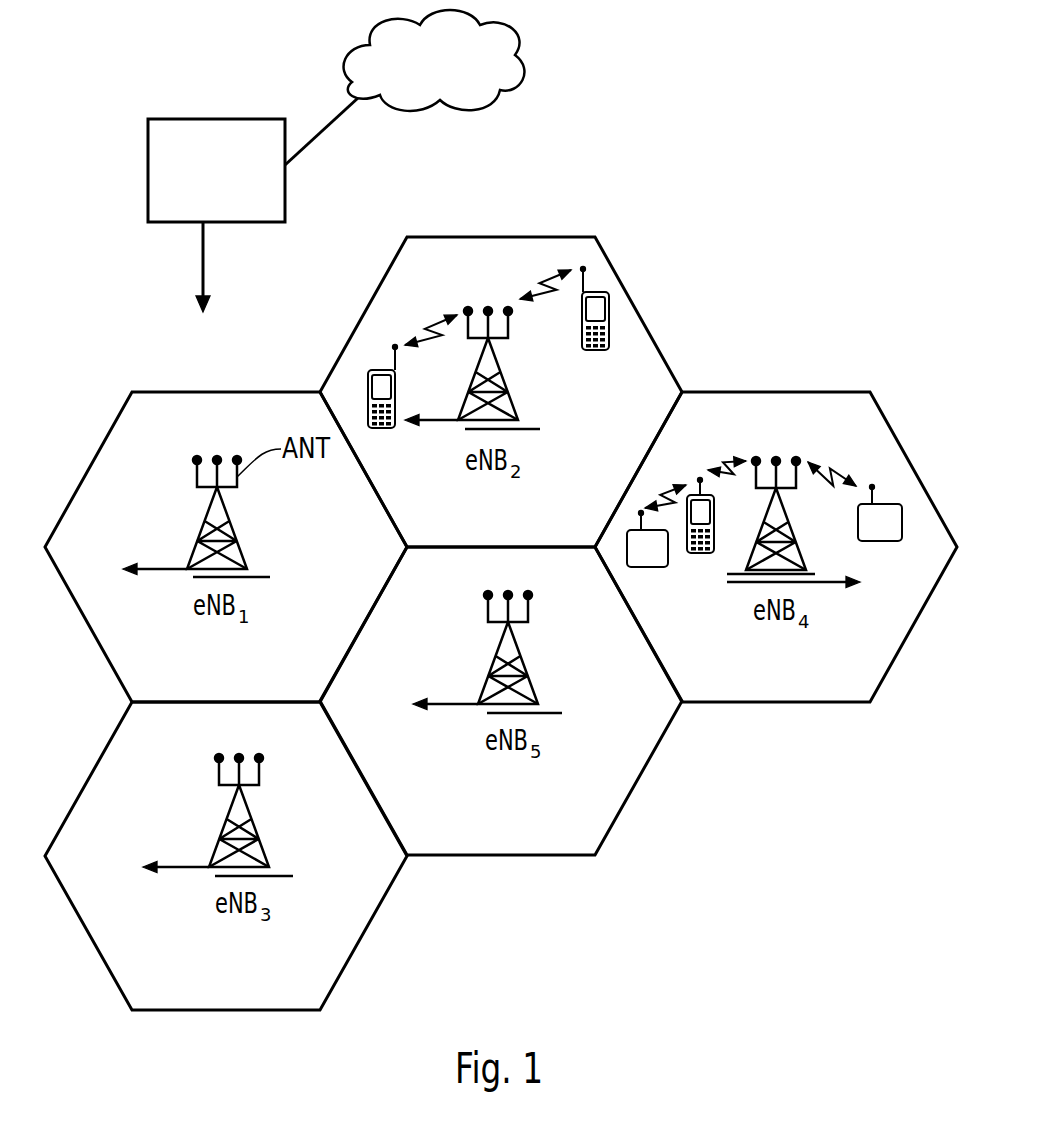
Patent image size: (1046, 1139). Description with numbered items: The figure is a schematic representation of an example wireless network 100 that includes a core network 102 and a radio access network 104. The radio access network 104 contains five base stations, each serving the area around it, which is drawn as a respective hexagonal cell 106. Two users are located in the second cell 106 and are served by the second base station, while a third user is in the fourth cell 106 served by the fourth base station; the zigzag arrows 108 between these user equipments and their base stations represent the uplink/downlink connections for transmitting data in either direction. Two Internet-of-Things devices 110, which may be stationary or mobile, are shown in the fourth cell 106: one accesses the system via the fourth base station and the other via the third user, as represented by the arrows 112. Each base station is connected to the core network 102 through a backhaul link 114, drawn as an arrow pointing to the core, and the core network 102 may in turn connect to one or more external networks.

The wireless network 100 is at (903, 151).
The core network 102 is at (148, 168).
The radio access network 104 is at (645, 848).
The cell 106 is at (501, 623).
The arrow representing uplink/downlink connection 108 is at (718, 463).
The IoT device 110 is at (880, 541).
The arrow representing IoT device access 112 is at (820, 457).
The backhaul link 114 is at (203, 250).